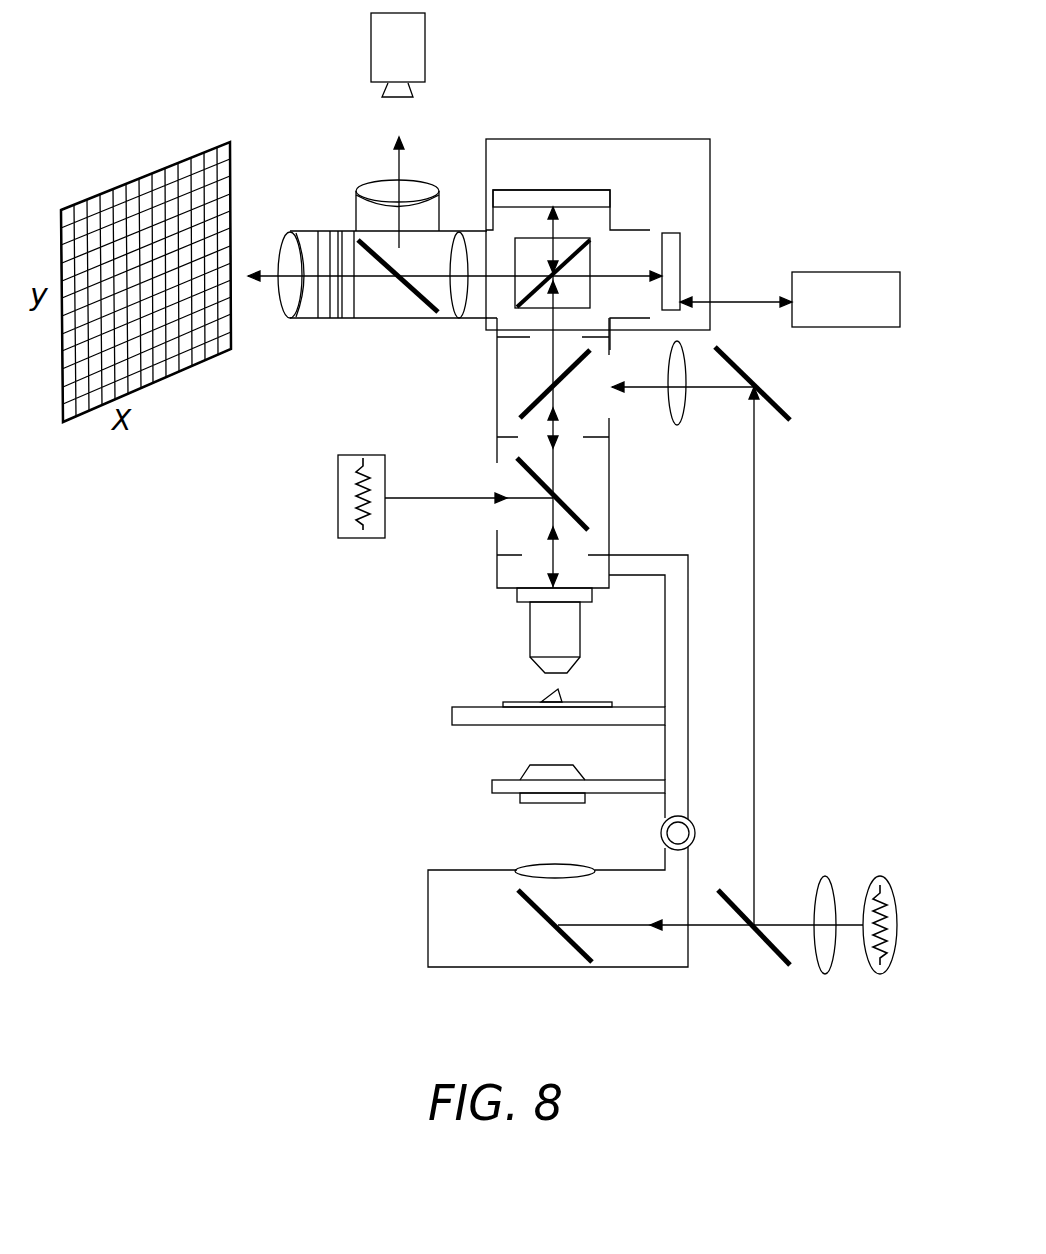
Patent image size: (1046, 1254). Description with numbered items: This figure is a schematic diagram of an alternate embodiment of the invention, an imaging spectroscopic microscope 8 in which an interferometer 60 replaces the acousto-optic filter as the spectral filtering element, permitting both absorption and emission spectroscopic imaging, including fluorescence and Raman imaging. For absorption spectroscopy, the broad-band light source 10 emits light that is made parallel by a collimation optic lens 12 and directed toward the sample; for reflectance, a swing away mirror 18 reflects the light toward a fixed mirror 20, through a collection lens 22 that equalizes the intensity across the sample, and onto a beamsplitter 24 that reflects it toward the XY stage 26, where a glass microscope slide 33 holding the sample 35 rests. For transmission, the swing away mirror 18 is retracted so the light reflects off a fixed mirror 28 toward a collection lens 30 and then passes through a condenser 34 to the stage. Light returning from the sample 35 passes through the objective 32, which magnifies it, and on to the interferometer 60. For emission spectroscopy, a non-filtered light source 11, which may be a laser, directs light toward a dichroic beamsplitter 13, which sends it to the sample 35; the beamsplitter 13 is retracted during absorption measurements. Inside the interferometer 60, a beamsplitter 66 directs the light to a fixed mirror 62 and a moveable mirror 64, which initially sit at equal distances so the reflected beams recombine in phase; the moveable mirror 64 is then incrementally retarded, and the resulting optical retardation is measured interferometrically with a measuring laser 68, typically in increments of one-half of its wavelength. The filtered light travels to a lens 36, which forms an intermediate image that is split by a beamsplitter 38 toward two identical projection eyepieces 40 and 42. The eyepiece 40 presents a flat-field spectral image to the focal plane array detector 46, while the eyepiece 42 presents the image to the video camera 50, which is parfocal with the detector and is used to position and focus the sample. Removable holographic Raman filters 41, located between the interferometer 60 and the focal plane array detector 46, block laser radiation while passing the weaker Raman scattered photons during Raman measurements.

The imaging spectroscopic microscope 8 is at (381, 636).
The light source 10 is at (877, 877).
The non-filtered light source 11 is at (338, 512).
The collimation optic lens 12 is at (823, 877).
The dichroic beamsplitter 13 is at (582, 523).
The swing away mirror 18 is at (727, 890).
The fixed mirror 20 is at (775, 398).
The collection lens 22 is at (680, 427).
The 50/50 beamsplitter 24 is at (533, 400).
The XY stage 26 is at (452, 715).
The fixed mirror 28 is at (570, 953).
The collection lens 30 is at (535, 865).
The objective 32 is at (530, 635).
The glass microscope slide 33 is at (508, 702).
The condenser 34 is at (522, 773).
The sample 35 is at (562, 696).
The lens 36 is at (465, 231).
The beamsplitter 38 is at (422, 302).
The projection eyepiece 40 is at (288, 235).
The holographic Raman filters 41 is at (330, 232).
The projection eyepiece 42 is at (364, 183).
The focal plane array detector 46 is at (158, 168).
The video camera 50 is at (425, 38).
The interferometer 60 is at (582, 128).
The fixed mirror 62 is at (537, 190).
The moveable mirror 64 is at (670, 233).
The beamsplitter 66 is at (577, 238).
The measuring laser 68 is at (848, 272).